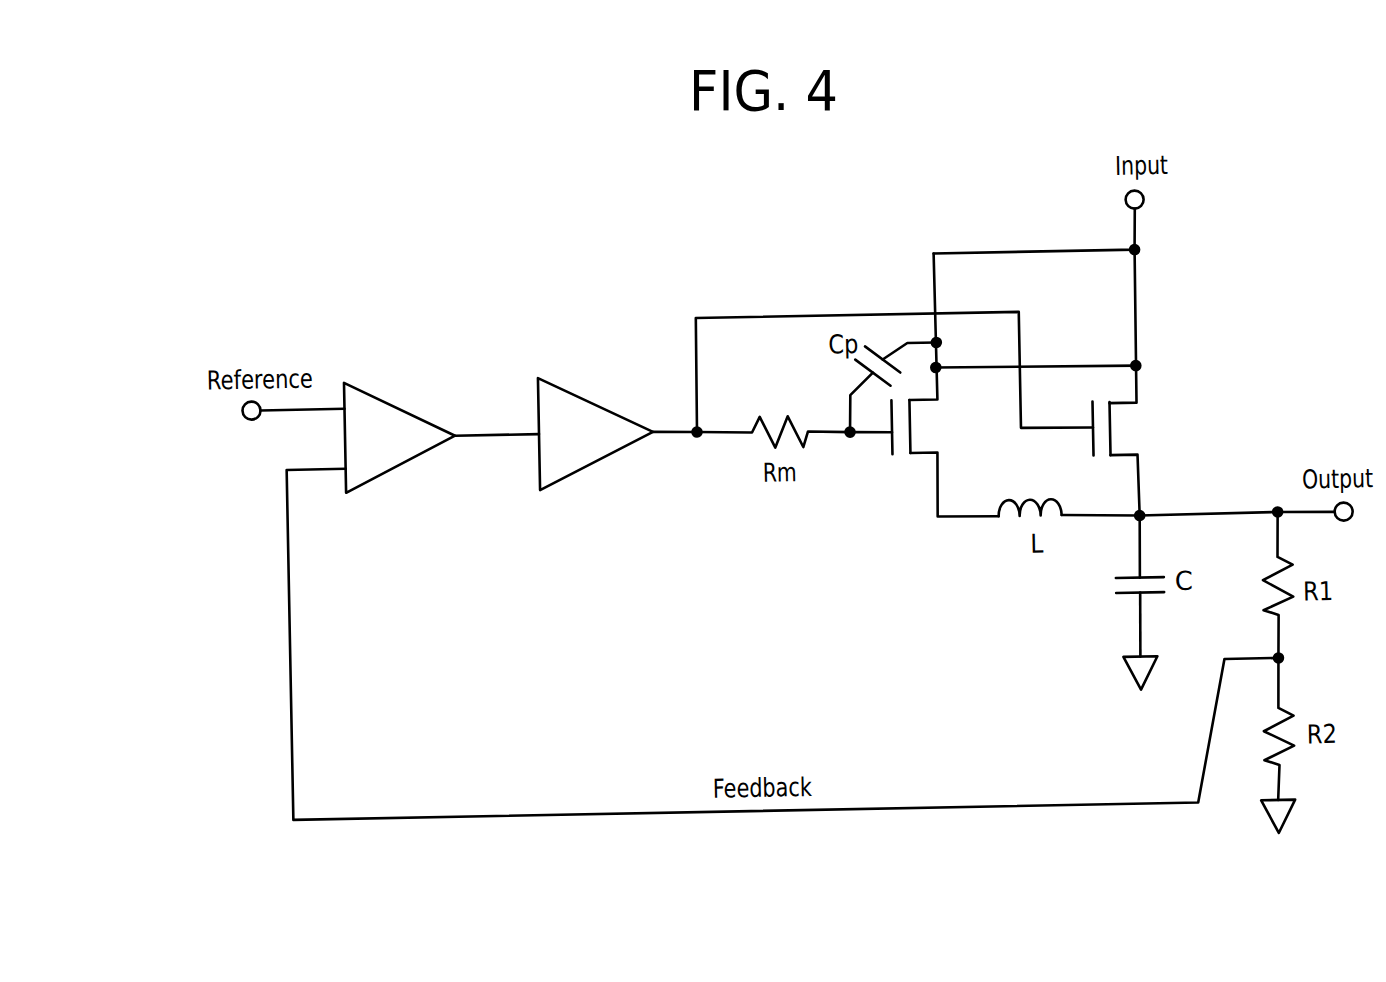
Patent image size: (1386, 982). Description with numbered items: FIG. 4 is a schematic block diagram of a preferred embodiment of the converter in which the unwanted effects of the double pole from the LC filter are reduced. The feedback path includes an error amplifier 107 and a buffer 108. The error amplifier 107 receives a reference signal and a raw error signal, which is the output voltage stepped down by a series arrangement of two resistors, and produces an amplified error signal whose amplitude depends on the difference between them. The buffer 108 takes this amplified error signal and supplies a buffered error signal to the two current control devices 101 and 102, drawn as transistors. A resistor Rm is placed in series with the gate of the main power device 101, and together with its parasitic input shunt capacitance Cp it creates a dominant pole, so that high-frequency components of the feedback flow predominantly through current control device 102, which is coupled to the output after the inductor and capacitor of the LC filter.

The current control device 101 is at (902, 467).
The current control device 102 is at (1148, 411).
The error amplifier 107 is at (385, 469).
The buffer 108 is at (582, 468).